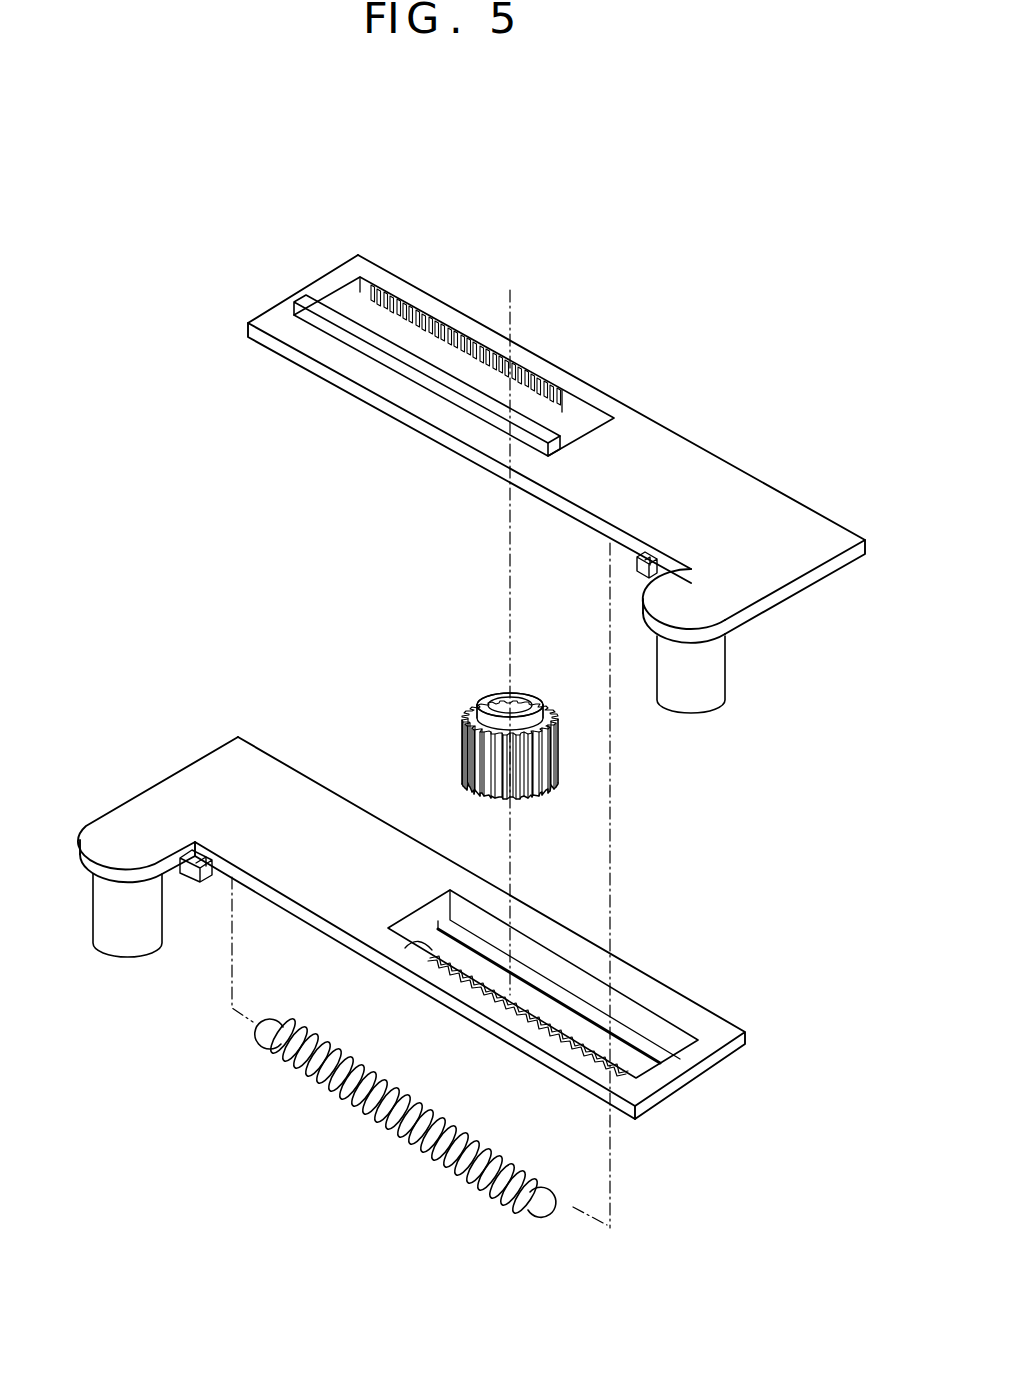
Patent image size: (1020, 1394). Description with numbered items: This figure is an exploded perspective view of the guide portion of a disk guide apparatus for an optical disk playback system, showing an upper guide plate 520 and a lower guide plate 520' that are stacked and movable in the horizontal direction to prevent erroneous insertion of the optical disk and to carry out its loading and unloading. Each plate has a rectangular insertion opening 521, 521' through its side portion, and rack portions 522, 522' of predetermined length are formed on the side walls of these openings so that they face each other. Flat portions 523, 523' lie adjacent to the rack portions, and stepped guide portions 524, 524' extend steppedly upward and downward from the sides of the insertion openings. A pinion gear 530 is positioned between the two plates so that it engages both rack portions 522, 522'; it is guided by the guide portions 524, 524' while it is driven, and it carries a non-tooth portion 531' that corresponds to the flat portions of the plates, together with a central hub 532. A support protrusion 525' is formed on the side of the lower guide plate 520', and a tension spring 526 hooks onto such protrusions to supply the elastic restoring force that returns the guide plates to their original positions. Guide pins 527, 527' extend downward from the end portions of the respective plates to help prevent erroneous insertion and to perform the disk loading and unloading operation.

The upper guide plate 520 is at (556, 449).
The rectangular insertion opening 521 is at (429, 339).
The rack portion 522 is at (466, 316).
The flat portion 523 is at (567, 348).
The stepped guide portion 524 is at (411, 377).
The tension spring 526 is at (645, 547).
The guide pin 527 is at (760, 674).
The pinion gear 530 is at (479, 673).
The pinion hub 532 is at (473, 703).
The non-tooth portion 531' is at (464, 758).
The lower guide plate 520' is at (411, 893).
The rectangular insertion opening 521' is at (568, 1035).
The rack portion 522' is at (521, 1020).
The flat portion 523' is at (354, 975).
The stepped guide portion 524' is at (616, 992).
The support protrusion 525' is at (182, 952).
The guide pin 527' is at (118, 964).